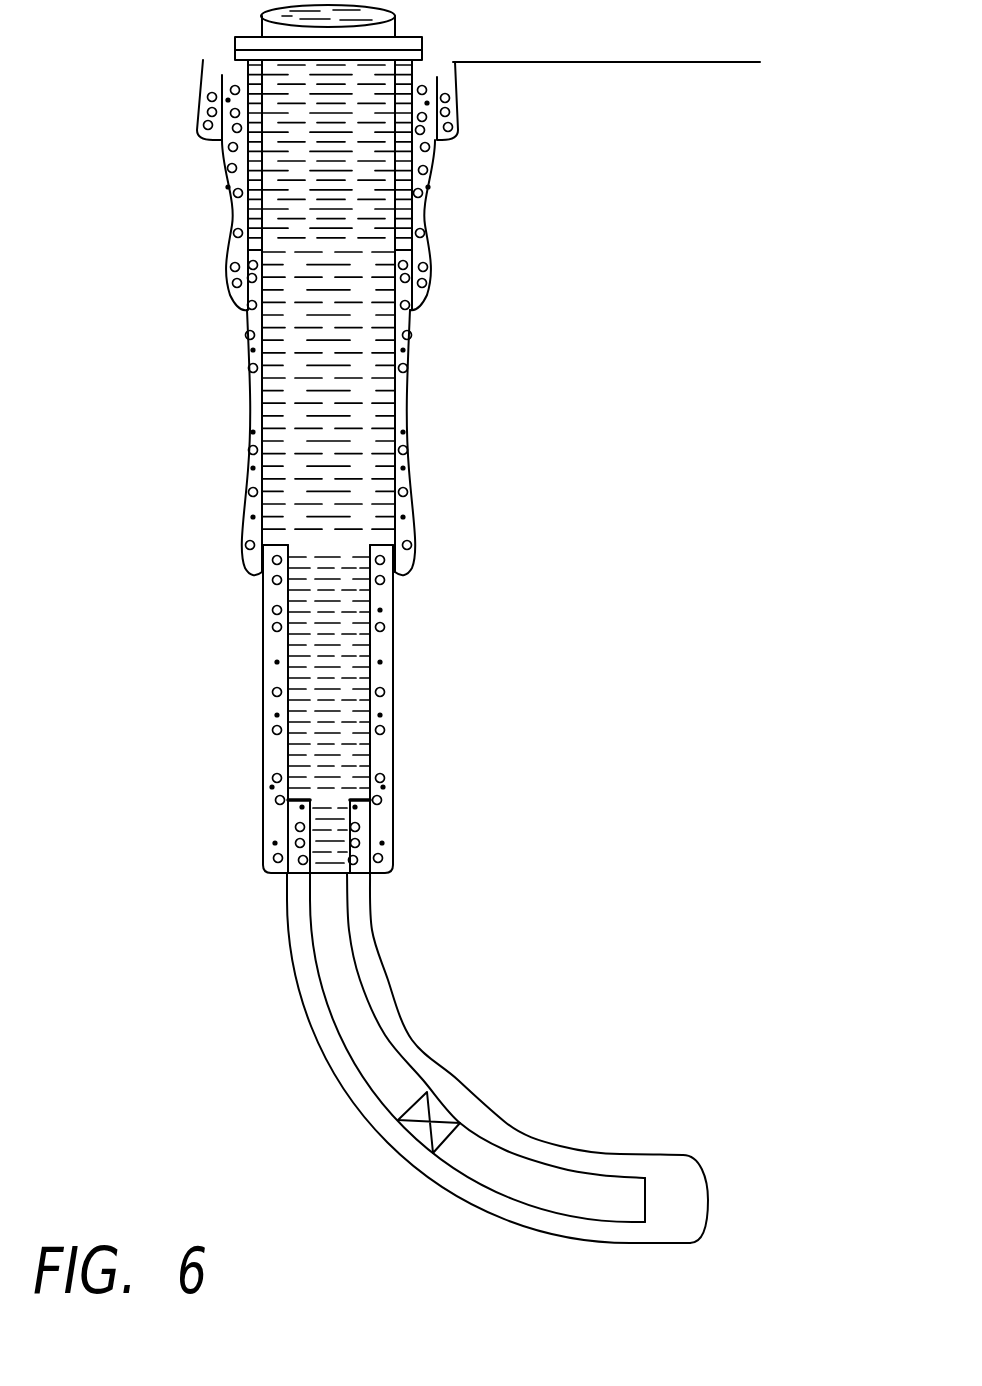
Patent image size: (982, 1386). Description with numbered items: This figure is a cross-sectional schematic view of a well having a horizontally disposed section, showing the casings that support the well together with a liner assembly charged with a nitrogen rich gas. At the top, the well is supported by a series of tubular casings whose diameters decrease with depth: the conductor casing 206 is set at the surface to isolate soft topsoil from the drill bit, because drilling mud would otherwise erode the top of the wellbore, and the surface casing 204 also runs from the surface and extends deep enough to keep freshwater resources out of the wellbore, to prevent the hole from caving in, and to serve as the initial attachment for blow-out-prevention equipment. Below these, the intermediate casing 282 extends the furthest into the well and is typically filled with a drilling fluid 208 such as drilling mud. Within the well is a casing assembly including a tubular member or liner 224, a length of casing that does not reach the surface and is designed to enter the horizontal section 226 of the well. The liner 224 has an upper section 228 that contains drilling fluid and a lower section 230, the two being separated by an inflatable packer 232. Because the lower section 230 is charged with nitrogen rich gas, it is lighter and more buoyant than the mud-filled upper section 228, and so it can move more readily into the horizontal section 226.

The intermediate casing 282 is at (395, 15).
The conductor casing 206 is at (447, 107).
The surface casing 204 is at (403, 277).
The drilling fluid 208 is at (342, 640).
The liner 224 is at (367, 980).
The upper section 228 is at (403, 1042).
The lower section 230 is at (473, 1150).
The horizontal section 226 is at (598, 1160).
The inflatable packer 232 is at (405, 1130).